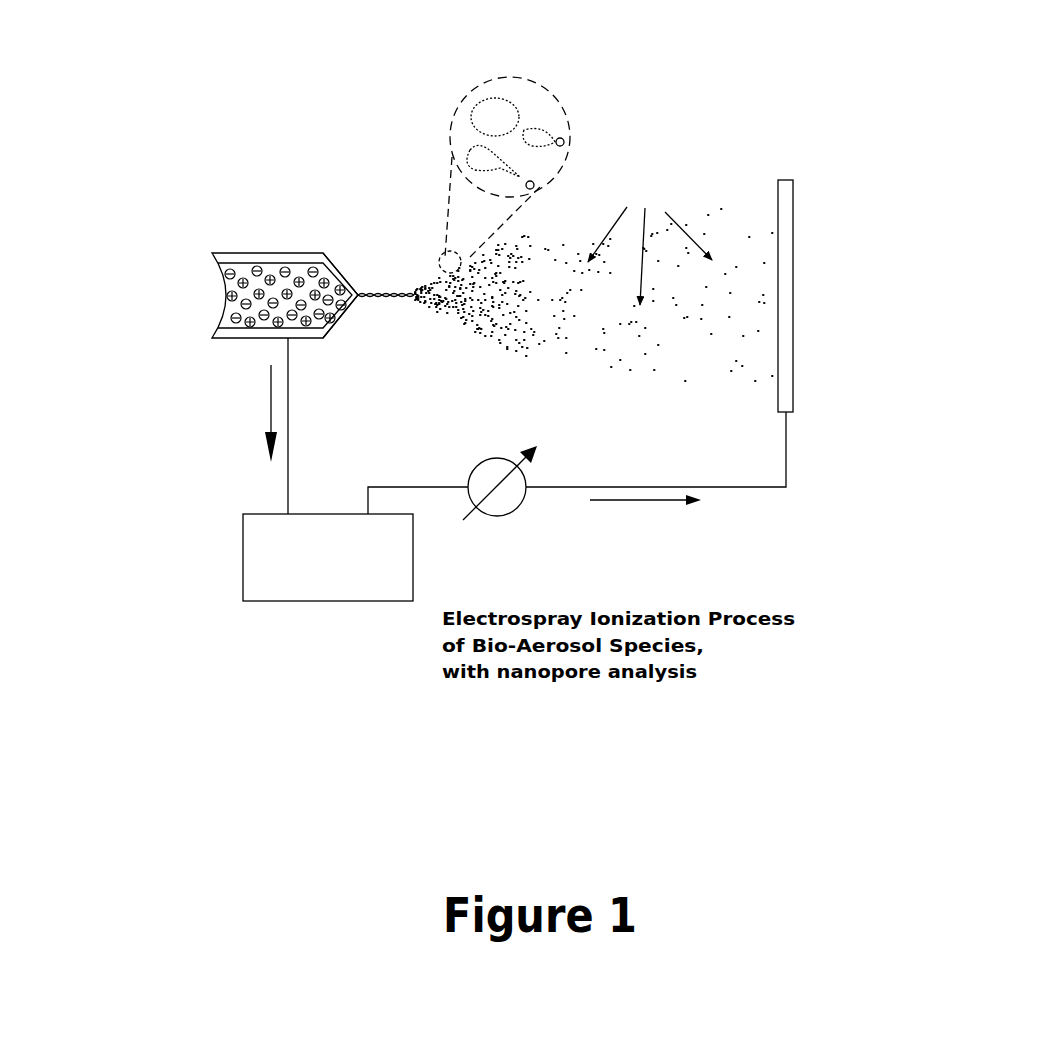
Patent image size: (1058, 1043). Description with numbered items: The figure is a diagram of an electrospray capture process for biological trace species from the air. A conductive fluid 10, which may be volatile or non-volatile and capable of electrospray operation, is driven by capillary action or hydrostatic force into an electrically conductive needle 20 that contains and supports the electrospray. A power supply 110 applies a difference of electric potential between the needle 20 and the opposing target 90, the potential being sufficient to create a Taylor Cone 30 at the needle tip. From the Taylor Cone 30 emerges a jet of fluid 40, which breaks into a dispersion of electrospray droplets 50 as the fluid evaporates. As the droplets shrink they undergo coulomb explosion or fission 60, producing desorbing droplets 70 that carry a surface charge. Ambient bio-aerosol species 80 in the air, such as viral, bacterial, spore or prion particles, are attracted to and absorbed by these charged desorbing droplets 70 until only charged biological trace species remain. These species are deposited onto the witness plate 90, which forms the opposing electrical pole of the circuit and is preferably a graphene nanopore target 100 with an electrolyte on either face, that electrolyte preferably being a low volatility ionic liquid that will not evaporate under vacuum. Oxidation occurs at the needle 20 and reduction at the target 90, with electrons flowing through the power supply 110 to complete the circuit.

The conductive fluid 10 is at (213, 293).
The needle 20 is at (262, 253).
The Taylor Cone 30 is at (343, 271).
The jet of fluid 40 is at (386, 281).
The dispersion of electrospray droplets 50 is at (473, 306).
The coulomb explosion of electrospray droplets 60 is at (581, 130).
The desorbing electrospray droplets 70 is at (651, 314).
The bio-aerosol species 80 is at (656, 220).
The witness plate 90 is at (789, 178).
The nanopore target 100 is at (871, 327).
The power supply 110 is at (471, 469).